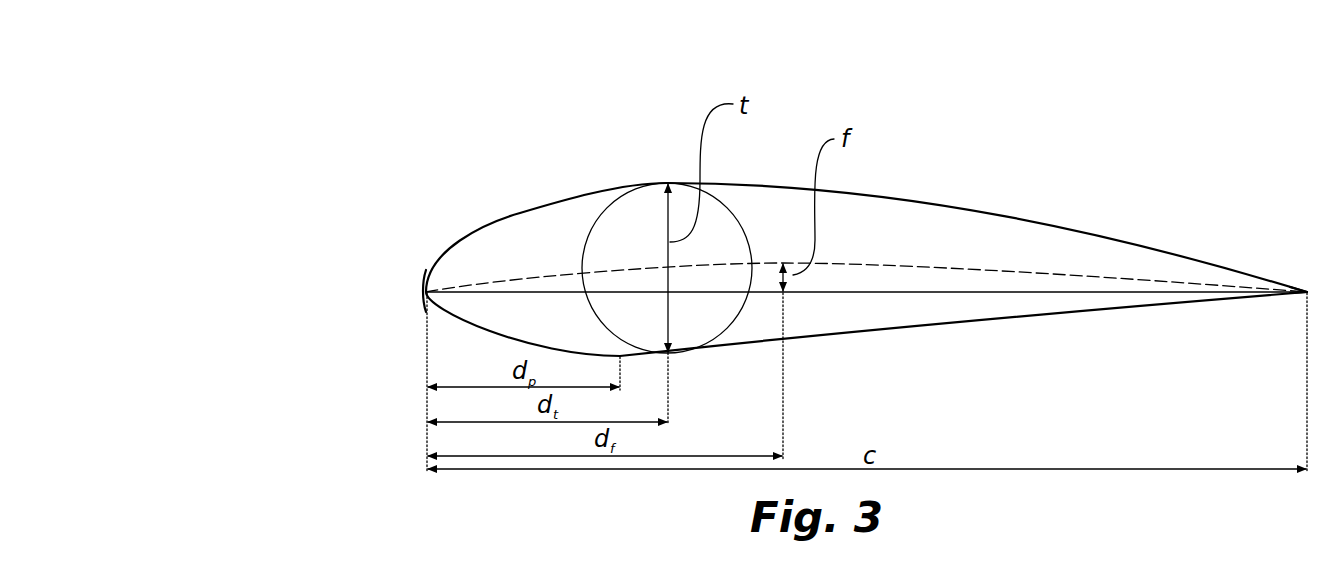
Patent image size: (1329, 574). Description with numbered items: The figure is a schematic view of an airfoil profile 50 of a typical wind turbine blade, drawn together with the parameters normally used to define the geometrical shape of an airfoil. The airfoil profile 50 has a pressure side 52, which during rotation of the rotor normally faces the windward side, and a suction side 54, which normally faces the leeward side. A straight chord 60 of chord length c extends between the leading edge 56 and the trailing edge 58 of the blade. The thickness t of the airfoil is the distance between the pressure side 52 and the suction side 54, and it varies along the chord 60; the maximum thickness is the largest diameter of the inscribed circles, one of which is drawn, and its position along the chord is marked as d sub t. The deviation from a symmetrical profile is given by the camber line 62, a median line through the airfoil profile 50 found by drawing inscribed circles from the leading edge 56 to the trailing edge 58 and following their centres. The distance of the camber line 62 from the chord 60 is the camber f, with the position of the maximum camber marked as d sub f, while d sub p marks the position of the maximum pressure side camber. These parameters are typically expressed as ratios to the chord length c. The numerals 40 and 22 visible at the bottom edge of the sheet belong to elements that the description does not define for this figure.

The airfoil 50 is at (838, 100).
The lower surface 52 is at (1040, 322).
The upper surface 54 is at (975, 203).
The leading edge 56 is at (426, 292).
The trailing edge 58 is at (1307, 292).
The chord line 60 is at (1083, 292).
The camber line 62 is at (855, 263).
The rotor blade 40 is at (269, 573).
The wind turbine component 22 is at (510, 573).